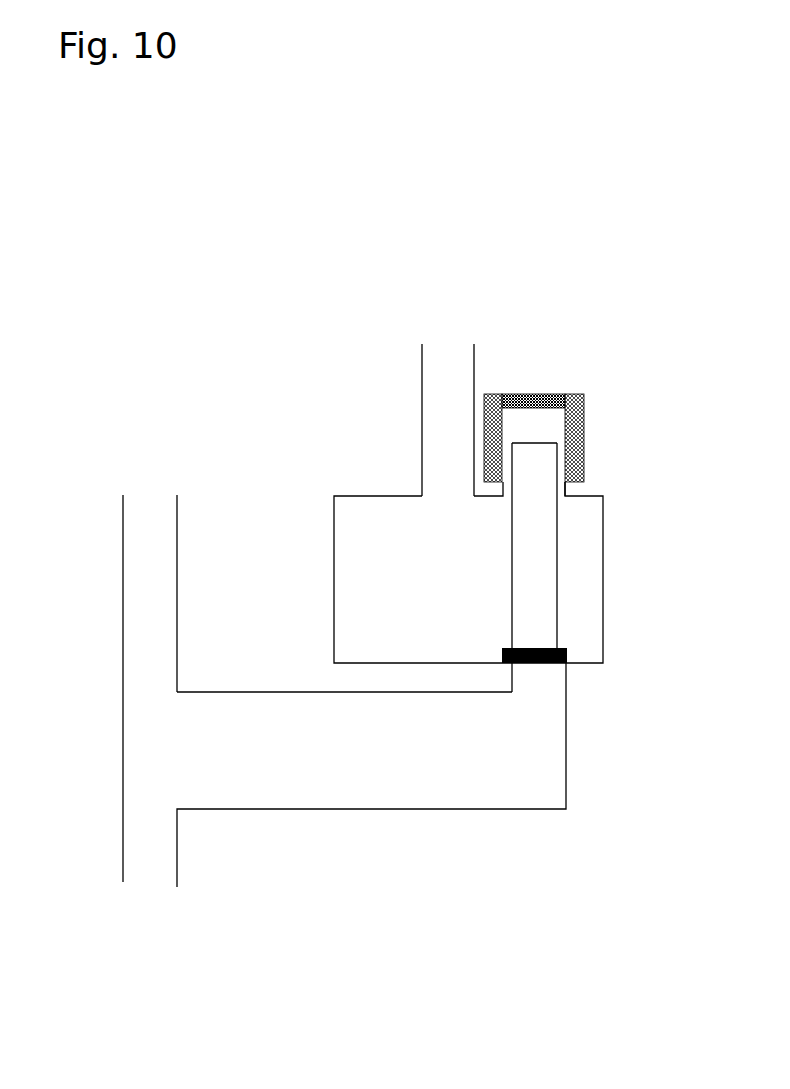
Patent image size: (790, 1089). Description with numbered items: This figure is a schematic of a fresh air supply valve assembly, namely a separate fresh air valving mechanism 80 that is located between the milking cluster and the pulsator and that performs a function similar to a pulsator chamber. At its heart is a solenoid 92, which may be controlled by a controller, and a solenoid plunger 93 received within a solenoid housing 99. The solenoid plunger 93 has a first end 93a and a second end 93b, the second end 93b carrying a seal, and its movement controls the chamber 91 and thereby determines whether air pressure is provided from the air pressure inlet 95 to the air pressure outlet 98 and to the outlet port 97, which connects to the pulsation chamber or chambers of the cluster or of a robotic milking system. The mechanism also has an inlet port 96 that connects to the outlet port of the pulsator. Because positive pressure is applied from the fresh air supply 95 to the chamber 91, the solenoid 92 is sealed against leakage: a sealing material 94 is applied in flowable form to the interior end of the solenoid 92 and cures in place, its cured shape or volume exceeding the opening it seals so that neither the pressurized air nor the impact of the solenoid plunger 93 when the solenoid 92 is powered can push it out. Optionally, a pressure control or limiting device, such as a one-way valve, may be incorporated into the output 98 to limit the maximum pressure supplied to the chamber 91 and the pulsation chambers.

The fresh air valving mechanism 80 is at (208, 354).
The chamber 91 is at (375, 598).
The solenoid 92 is at (584, 412).
The solenoid plunger 93 is at (535, 543).
The first end 93a is at (535, 442).
The second end 93b is at (538, 647).
The sealing material 94 is at (542, 393).
The air pressure inlet 95 is at (443, 341).
The inlet port 96 is at (179, 841).
The outlet port 97 is at (149, 494).
The air pressure outlet 98 is at (422, 766).
The solenoid housing 99 is at (567, 492).